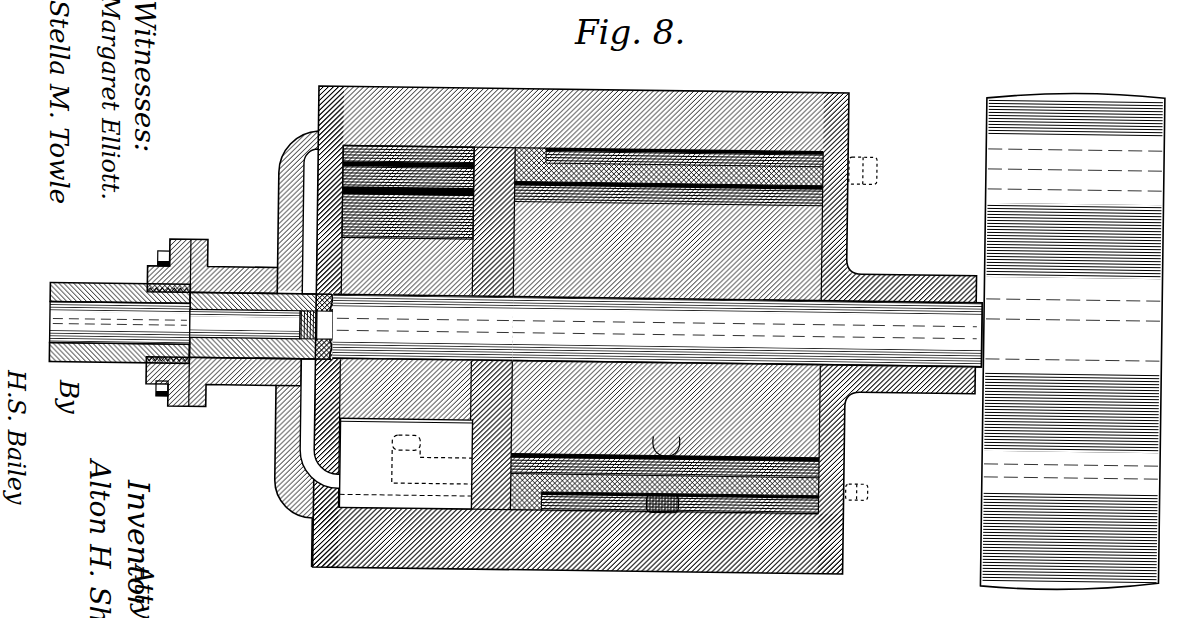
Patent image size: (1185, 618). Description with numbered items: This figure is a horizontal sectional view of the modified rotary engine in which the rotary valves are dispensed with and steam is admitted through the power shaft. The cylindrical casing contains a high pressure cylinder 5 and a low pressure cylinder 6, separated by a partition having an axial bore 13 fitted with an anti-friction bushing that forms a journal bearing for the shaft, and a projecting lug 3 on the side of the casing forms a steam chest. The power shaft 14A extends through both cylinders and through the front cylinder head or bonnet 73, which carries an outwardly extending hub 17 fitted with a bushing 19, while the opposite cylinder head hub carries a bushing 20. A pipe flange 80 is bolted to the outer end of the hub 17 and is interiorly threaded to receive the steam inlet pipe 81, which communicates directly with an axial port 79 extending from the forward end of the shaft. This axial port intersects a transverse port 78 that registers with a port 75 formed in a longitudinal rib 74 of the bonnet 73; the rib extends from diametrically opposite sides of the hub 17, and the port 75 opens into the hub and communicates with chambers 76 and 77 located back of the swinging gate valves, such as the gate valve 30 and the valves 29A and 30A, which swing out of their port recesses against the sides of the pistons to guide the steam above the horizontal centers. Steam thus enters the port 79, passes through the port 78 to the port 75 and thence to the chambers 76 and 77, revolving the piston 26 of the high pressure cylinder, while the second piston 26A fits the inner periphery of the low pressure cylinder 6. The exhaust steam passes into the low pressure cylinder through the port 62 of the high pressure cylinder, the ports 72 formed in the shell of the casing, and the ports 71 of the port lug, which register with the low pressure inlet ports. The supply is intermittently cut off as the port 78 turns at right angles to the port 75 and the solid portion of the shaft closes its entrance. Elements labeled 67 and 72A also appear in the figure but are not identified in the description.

The lug portion 3 is at (833, 333).
The high pressure cylinder 5 is at (319, 223).
The low pressure cylinder 6 is at (825, 467).
The axial bore 13 is at (494, 294).
The power shaft 14A is at (747, 332).
The hub 17 is at (232, 274).
The bushing 19 is at (243, 387).
The bushing 20 is at (916, 370).
The piston 26 is at (430, 298).
The second piston 26A is at (681, 293).
The swinging gate valve 29A is at (825, 163).
The swinging gate valve 30 is at (347, 471).
The swinging gate valve 30A is at (866, 495).
The exhaust port 62 is at (397, 441).
The oil cup 67 is at (667, 434).
The port 71 is at (668, 508).
The port 72 is at (446, 444).
The pulley 72A is at (1072, 341).
The front cylinder head 73 is at (319, 98).
The longitudinal rib 74 is at (280, 433).
The port 75 is at (280, 168).
The chamber 76 is at (403, 154).
The chamber 77 is at (394, 500).
The transverse port 78 is at (330, 322).
The axial port 79 is at (174, 398).
The pipe flange 80 is at (181, 241).
The steam inlet pipe 81 is at (93, 286).